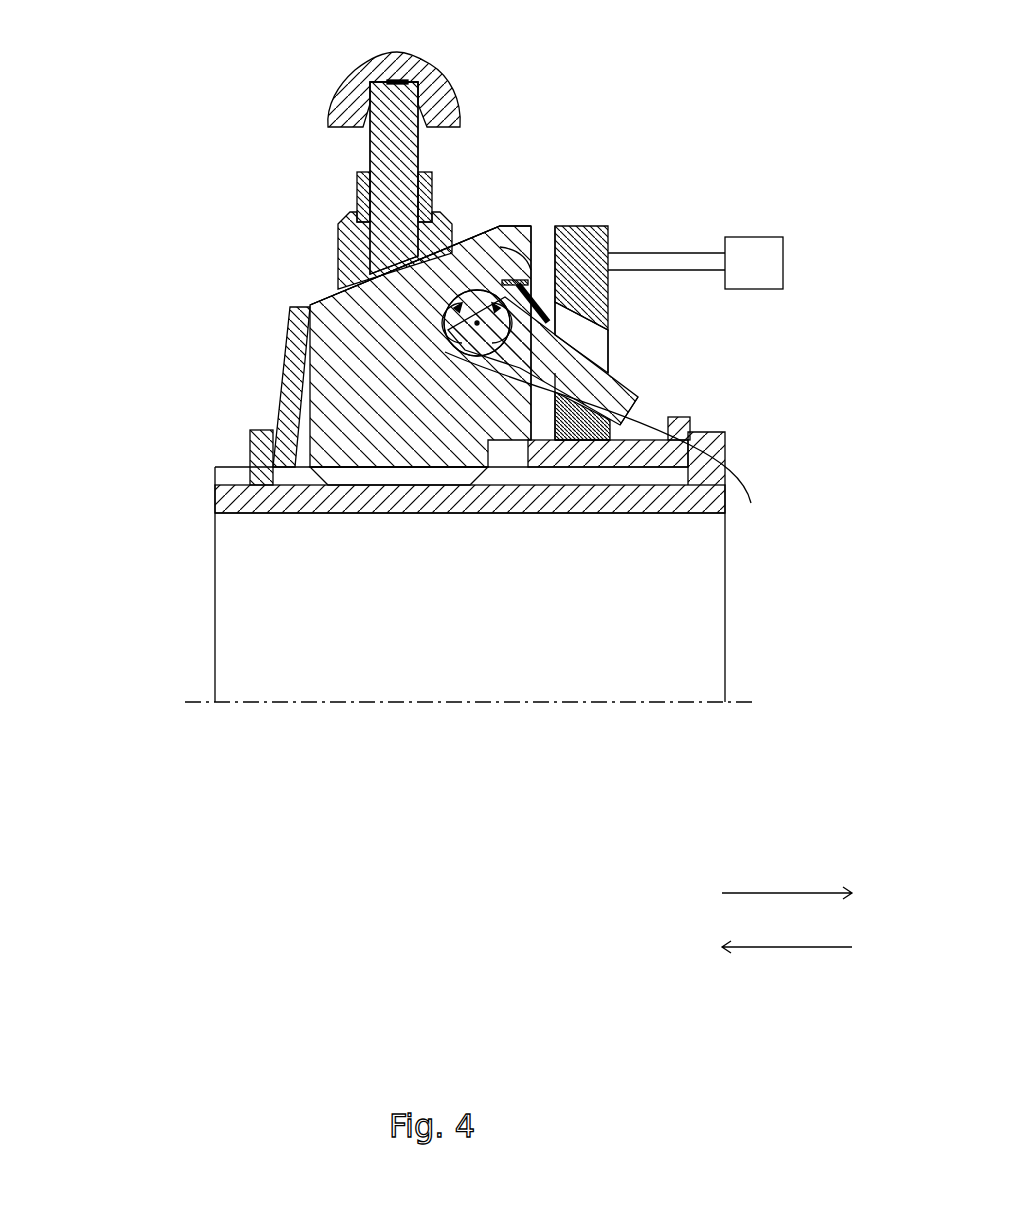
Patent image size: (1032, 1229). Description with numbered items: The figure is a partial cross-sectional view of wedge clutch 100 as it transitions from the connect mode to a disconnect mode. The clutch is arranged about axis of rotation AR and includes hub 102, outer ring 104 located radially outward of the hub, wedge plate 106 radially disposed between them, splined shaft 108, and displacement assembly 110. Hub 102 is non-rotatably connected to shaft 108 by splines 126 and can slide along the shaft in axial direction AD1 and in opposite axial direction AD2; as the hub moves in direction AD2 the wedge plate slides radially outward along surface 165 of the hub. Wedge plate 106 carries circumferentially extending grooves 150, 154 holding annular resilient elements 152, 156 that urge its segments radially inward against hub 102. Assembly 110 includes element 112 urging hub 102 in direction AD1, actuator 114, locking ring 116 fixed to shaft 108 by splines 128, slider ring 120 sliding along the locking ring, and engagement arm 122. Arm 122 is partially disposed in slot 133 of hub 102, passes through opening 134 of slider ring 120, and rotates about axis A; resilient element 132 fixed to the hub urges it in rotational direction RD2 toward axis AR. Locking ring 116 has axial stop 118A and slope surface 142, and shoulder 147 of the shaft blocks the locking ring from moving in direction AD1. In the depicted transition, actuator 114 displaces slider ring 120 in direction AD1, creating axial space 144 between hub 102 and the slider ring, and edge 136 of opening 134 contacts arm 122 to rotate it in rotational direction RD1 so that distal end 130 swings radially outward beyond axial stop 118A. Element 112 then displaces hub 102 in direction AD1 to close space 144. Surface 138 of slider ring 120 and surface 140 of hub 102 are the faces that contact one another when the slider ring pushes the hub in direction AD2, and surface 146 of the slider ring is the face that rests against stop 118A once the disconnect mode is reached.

The wedge clutch 100 is at (697, 87).
The hub 102 is at (313, 300).
The outer ring 104 is at (380, 53).
The wedge plate 106 is at (370, 150).
The splined shaft 108 is at (350, 515).
The displacement assembly 110 is at (690, 183).
The element 112 is at (285, 328).
The actuator 114 is at (748, 237).
The locking ring 116 is at (682, 410).
The axial stop 118A is at (616, 441).
The slider ring 120 is at (585, 226).
The engagement arm 122 is at (623, 377).
The splines 126 is at (447, 480).
The splines 128 is at (618, 480).
The distal end 130 is at (640, 425).
The resilient element 132 is at (477, 233).
The slot 133 is at (441, 341).
The opening 134 is at (587, 333).
The edge 136 is at (570, 433).
The surface 138 is at (552, 262).
The surface 140 is at (531, 233).
The slope surface 142 is at (653, 432).
The axial space 144 is at (541, 270).
The surface 146 is at (580, 433).
The shoulder 147 is at (713, 447).
The circumferentially extending groove 150 is at (413, 268).
The annular resilient element 152 is at (433, 190).
The circumferentially extending groove 154 is at (338, 249).
The annular resilient element 156 is at (357, 192).
The surface 165 is at (317, 298).
The axis A is at (477, 330).
The axis of rotation AR is at (655, 705).
The rotational direction RD1 is at (527, 338).
The rotational direction RD2 is at (447, 311).
The axial direction AD1 is at (762, 893).
The axial direction AD2 is at (787, 947).